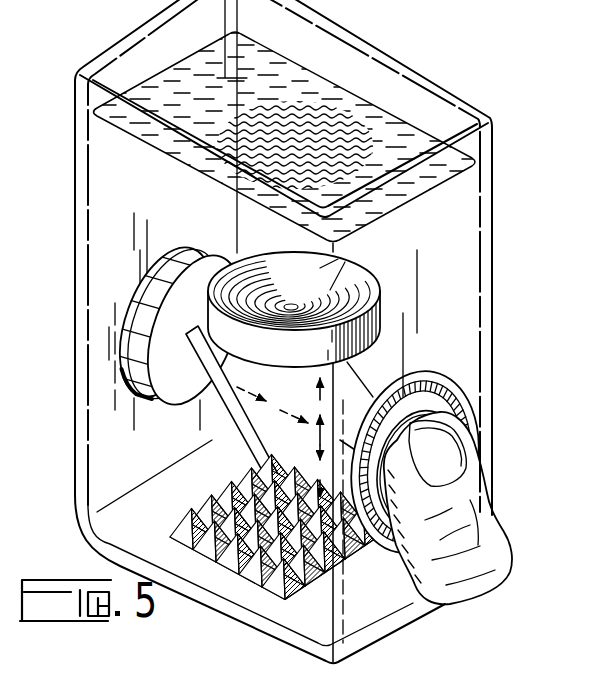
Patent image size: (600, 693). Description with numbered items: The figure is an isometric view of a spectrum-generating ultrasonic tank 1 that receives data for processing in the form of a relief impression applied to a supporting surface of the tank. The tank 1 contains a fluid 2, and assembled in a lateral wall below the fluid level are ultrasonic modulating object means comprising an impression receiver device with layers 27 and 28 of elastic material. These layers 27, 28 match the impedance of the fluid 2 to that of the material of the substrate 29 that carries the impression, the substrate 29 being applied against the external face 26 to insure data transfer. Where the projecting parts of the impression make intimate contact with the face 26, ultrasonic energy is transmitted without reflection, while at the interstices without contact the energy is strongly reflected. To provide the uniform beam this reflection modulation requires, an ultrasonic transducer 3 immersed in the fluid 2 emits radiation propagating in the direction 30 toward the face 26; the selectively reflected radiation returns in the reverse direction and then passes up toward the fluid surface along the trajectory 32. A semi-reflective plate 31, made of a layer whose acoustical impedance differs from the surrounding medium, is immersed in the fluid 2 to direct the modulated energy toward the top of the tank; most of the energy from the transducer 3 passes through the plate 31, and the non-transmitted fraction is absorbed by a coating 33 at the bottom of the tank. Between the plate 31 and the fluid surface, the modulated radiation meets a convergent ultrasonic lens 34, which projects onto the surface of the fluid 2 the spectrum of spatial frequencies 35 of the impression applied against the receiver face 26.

The ultrasonic tank 1 is at (493, 263).
The fluid 2 is at (277, 63).
The ultrasonic transducer 3 is at (180, 316).
The external face 26 is at (472, 413).
The layer of elastic material 27 is at (422, 381).
The layer of elastic material 28 is at (415, 375).
The substrate 29 is at (487, 493).
The direction of propagation 30 is at (303, 425).
The semi-reflective plate 31 is at (240, 450).
The trajectory 32 is at (303, 437).
The absorbing coating 33 is at (176, 537).
The convergent ultrasonic lens 34 is at (350, 272).
The spectrum of spatial frequencies 35 is at (345, 122).